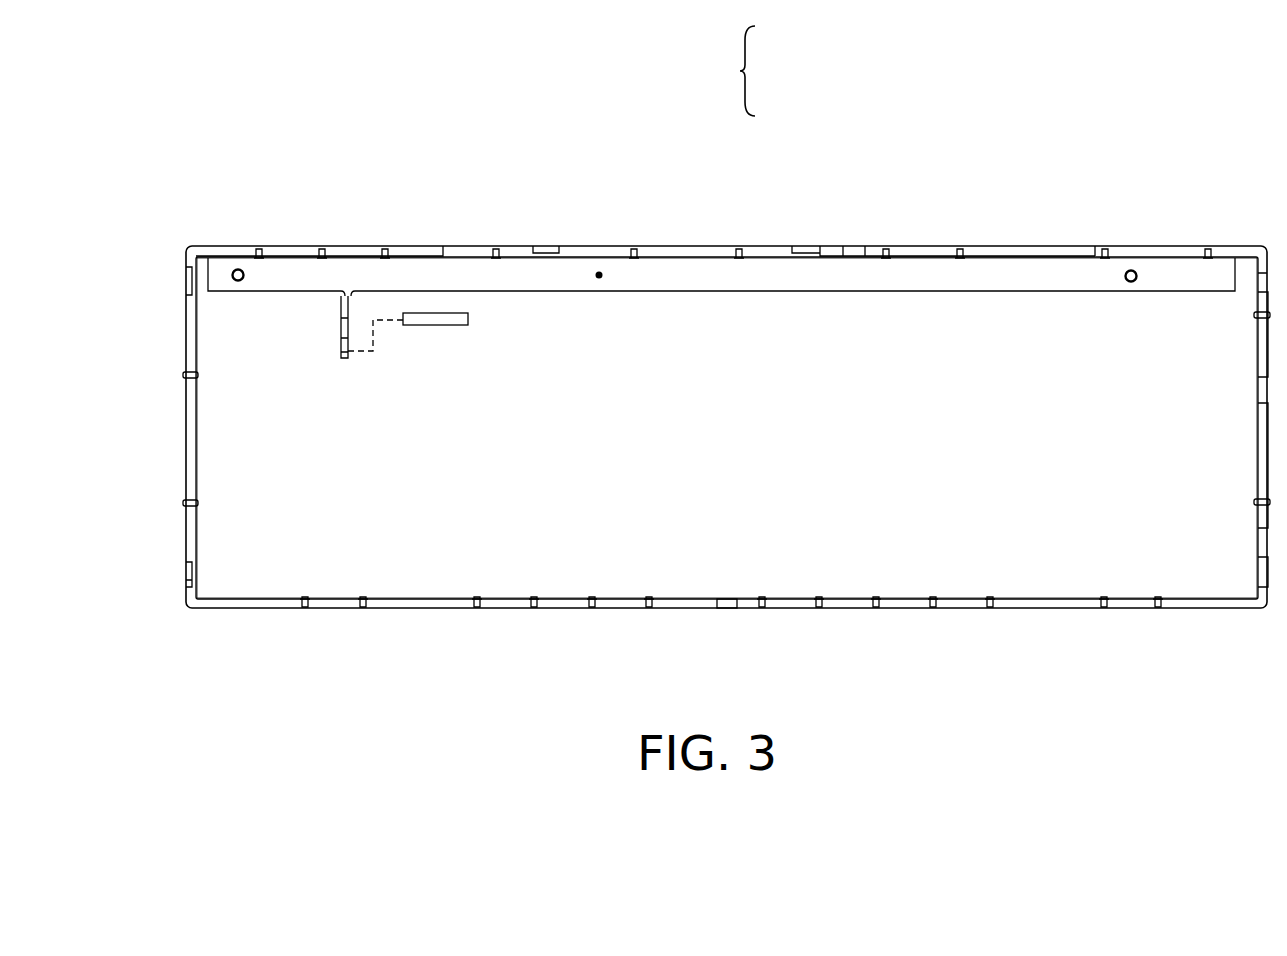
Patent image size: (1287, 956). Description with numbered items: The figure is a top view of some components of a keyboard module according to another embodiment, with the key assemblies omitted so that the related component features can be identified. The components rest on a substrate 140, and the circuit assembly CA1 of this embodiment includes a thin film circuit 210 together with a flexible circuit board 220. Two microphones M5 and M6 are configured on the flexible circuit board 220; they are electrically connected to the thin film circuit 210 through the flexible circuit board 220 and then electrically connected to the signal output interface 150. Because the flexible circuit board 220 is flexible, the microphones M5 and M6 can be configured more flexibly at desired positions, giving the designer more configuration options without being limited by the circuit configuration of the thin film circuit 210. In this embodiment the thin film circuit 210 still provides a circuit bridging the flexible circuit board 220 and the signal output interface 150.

The substrate 140 is at (186, 418).
The thin film circuit 210 is at (335, 572).
The flexible circuit board 220 is at (687, 273).
The signal output interface 150 is at (436, 325).
The microphone M5 is at (238, 268).
The microphone M6 is at (1131, 269).
The circuit assembly CA1 is at (747, 72).